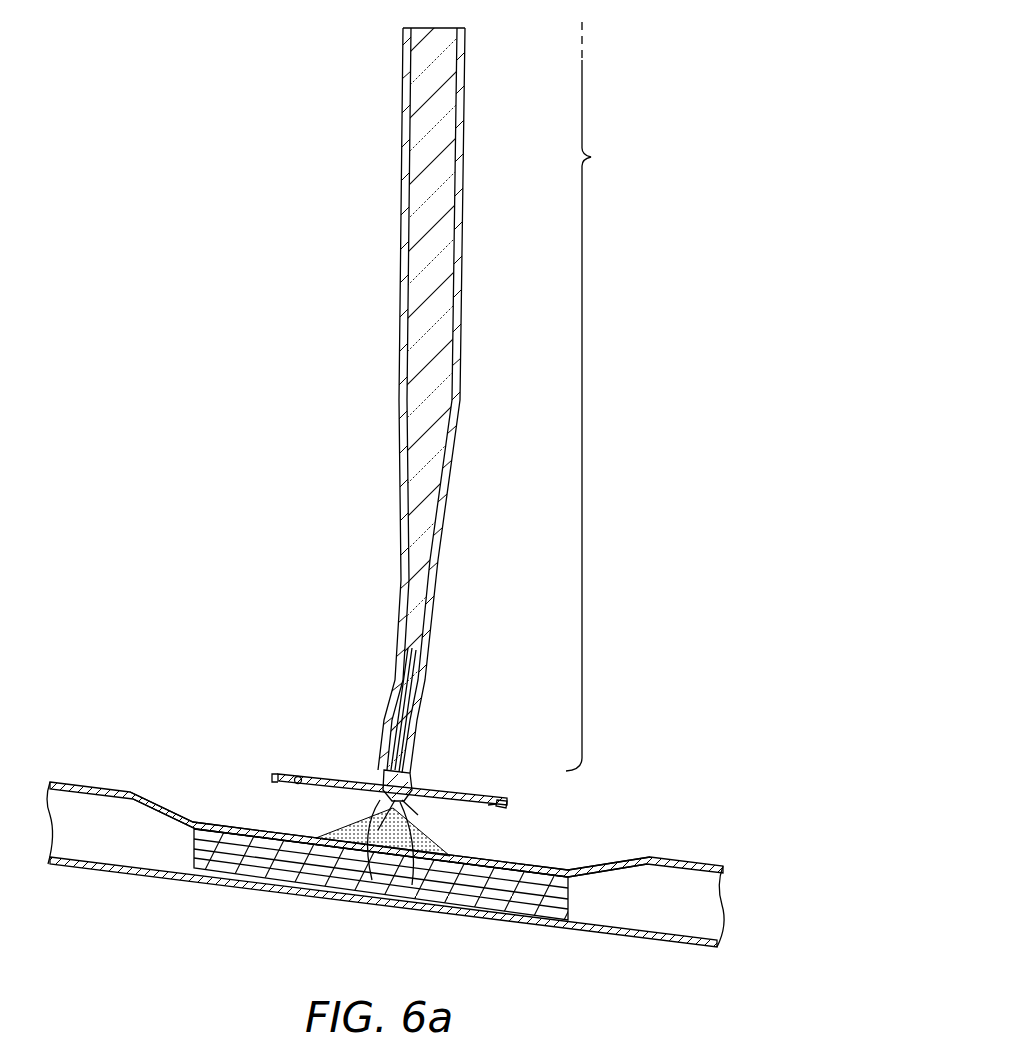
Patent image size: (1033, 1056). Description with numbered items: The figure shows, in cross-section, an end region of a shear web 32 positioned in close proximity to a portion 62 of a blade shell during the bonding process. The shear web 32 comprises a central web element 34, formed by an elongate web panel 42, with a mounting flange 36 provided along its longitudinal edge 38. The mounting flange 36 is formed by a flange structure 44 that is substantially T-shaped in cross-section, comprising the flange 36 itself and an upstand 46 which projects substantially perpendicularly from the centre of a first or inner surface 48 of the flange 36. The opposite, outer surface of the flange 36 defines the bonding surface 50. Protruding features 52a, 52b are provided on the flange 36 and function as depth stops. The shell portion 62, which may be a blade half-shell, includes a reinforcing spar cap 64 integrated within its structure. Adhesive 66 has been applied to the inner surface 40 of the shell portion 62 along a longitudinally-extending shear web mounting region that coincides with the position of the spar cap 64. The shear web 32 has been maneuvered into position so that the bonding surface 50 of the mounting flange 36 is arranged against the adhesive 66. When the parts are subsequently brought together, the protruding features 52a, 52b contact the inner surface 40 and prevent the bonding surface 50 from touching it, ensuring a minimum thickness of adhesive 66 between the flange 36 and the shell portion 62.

The shear web 32 is at (348, 64).
The central web element 34 is at (598, 396).
The mounting flange 36 is at (430, 786).
The longitudinal edge 38 is at (374, 769).
The inner surface 40 is at (207, 820).
The web panel 42 is at (400, 190).
The flange structure 44 is at (396, 730).
The upstand 46 is at (419, 680).
The first surface 48 is at (481, 794).
The bonding surface 50 is at (278, 787).
The protruding feature 52a is at (370, 822).
The protruding feature 52b is at (297, 776).
The shell portion 62 is at (122, 858).
The spar cap 64 is at (262, 880).
The adhesive 66 is at (410, 848).